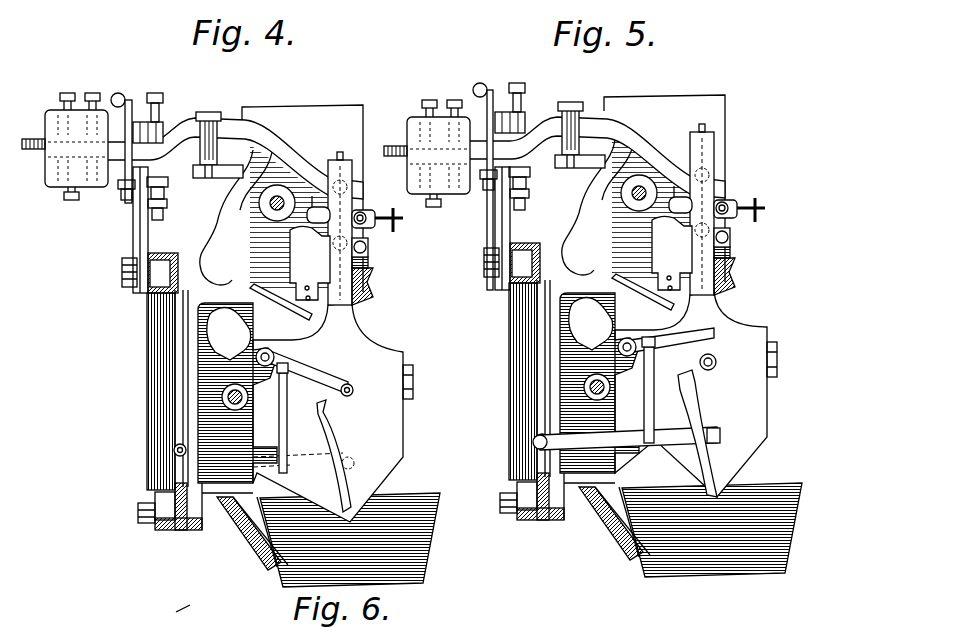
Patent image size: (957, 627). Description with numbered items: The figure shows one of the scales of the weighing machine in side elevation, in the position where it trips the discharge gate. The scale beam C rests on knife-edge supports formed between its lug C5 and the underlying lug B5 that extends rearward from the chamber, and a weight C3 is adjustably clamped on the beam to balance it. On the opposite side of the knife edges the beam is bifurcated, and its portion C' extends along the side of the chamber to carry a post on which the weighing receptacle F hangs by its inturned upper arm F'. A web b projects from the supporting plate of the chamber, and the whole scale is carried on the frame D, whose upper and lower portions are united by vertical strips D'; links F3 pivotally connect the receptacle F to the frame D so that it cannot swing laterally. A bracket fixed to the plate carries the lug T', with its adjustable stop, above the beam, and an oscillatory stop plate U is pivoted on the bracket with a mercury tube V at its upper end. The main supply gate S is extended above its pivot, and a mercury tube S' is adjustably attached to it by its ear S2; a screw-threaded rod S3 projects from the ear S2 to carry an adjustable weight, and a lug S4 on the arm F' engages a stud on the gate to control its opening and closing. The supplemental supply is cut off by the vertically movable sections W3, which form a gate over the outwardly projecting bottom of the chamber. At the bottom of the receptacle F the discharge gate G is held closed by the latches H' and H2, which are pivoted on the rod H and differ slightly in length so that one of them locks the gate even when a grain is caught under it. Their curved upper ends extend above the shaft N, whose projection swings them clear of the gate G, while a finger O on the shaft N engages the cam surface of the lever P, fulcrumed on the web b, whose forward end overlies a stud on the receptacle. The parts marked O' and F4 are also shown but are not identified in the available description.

In FIG. 4, the weight C3 is at (50, 112).
In FIG. 5, the weight C3 is at (427, 140).
In FIG. 4, the mercury tube V is at (117, 92).
In FIG. 5, the mercury tube V is at (477, 71).
In FIG. 4, the scale beam C is at (234, 146).
In FIG. 5, the scale beam C is at (596, 142).
In FIG. 4, the lug C5 is at (238, 100).
In FIG. 5, the lug C5 is at (583, 114).
In FIG. 4, the bifurcated portion of scale beam C' is at (302, 198).
In FIG. 5, the bifurcated portion of scale beam C' is at (664, 188).
In FIG. 4, the lug B5 is at (218, 186).
In FIG. 5, the lug B5 is at (580, 178).
In FIG. 4, the rod H is at (286, 180).
In FIG. 5, the rod H is at (619, 199).
In FIG. 4, the latch H' is at (256, 267).
In FIG. 5, the latch H' is at (629, 216).
In FIG. 4, the web b is at (225, 216).
In FIG. 5, the web b is at (551, 227).
In FIG. 4, the oscillatory stop plate U is at (125, 163).
In FIG. 5, the oscillatory stop plate U is at (481, 205).
In FIG. 4, the lug T' is at (119, 193).
In FIG. 5, the lug T' is at (487, 186).
In FIG. 4, the gate S is at (359, 234).
In FIG. 4, the mercury tube S' is at (376, 248).
In FIG. 5, the mercury tube S' is at (732, 213).
In FIG. 4, the ear S2 is at (368, 259).
In FIG. 4, the screw threaded rod S3 is at (377, 210).
In FIG. 5, the screw threaded rod S3 is at (746, 224).
In FIG. 4, the lug S4 is at (311, 226).
In FIG. 5, the lug S4 is at (726, 233).
In FIG. 4, the gate sections W3 is at (290, 262).
In FIG. 5, the gate sections W3 is at (657, 253).
In FIG. 4, the frame D is at (134, 371).
In FIG. 5, the frame D is at (503, 361).
In FIG. 4, the vertical strip D' is at (146, 390).
In FIG. 5, the vertical strip D' is at (542, 400).
In FIG. 4, the finger O is at (184, 456).
In FIG. 4, the pivot O' is at (153, 431).
In FIG. 4, the arm of weighing receptacle F' is at (315, 403).
In FIG. 5, the arm of weighing receptacle F' is at (668, 385).
In FIG. 4, the weighing receptacle F is at (302, 405).
In FIG. 5, the weighing receptacle F is at (677, 385).
In FIG. 4, the lever P is at (352, 394).
In FIG. 5, the lever P is at (723, 369).
In FIG. 4, the shaft N is at (233, 406).
In FIG. 5, the shaft N is at (600, 412).
In FIG. 4, the discharge gate G is at (311, 483).
In FIG. 5, the discharge gate G is at (678, 433).
In FIG. 4, the link F3 is at (240, 513).
In FIG. 5, the link F3 is at (605, 500).
In FIG. 4, the base block F4 is at (431, 556).
In FIG. 5, the base block F4 is at (710, 543).
In FIG. 4, the latch H2 is at (171, 616).